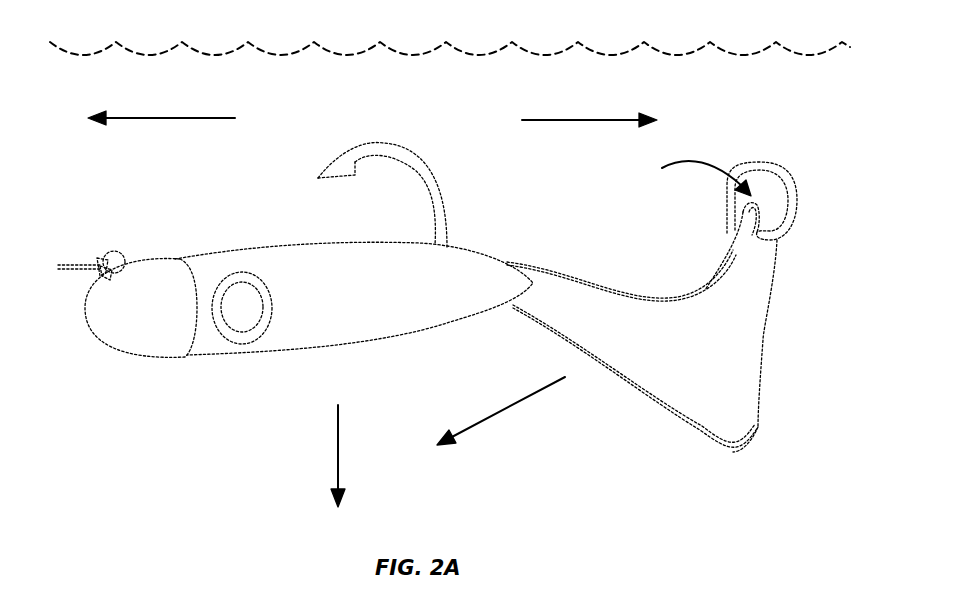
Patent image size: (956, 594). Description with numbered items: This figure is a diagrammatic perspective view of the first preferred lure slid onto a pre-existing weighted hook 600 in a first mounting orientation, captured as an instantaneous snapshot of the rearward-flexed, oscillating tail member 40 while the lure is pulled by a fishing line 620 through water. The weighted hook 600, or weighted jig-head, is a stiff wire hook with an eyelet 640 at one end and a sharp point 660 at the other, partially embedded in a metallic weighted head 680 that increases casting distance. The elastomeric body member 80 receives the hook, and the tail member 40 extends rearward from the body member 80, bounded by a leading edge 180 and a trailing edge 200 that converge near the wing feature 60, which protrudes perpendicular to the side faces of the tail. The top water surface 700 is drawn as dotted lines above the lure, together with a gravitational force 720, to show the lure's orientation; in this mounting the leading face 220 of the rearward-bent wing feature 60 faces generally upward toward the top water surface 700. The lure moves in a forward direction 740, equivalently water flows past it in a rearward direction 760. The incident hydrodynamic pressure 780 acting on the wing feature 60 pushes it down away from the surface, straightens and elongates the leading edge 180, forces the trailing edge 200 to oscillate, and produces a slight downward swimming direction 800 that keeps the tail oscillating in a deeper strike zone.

The tail member 40 is at (735, 413).
The wing feature 60 is at (768, 162).
The body member 80 is at (383, 335).
The leading edge 180 is at (655, 296).
The trailing edge 200 is at (765, 340).
The leading face 220 is at (772, 188).
The weighted hook 600 is at (367, 155).
The fishing line 620 is at (70, 265).
The eyelet 640 is at (118, 252).
The sharp point 660 is at (318, 178).
The weighted head 680 is at (150, 348).
The top water surface 700 is at (415, 55).
The gravitational force 720 is at (337, 458).
The forward direction 740 is at (180, 118).
The rearward direction 760 is at (578, 120).
The incident hydrodynamic pressure 780 is at (708, 168).
The downward swimming direction 800 is at (515, 405).